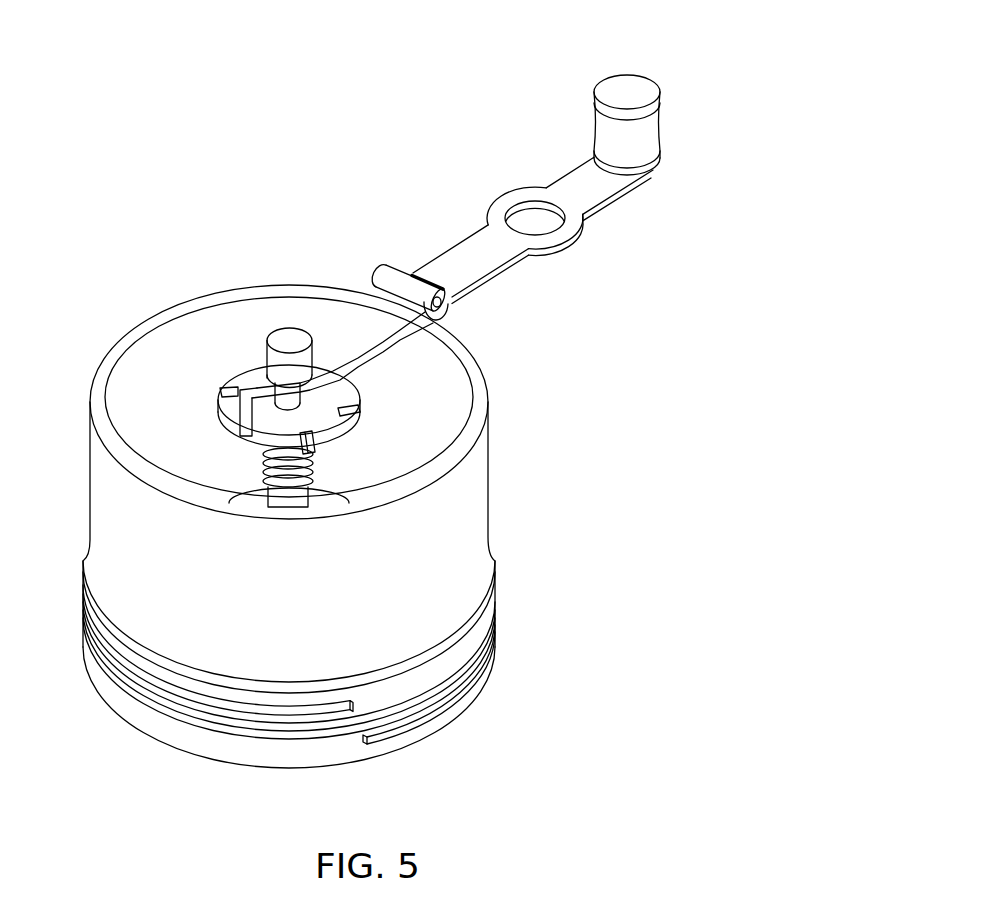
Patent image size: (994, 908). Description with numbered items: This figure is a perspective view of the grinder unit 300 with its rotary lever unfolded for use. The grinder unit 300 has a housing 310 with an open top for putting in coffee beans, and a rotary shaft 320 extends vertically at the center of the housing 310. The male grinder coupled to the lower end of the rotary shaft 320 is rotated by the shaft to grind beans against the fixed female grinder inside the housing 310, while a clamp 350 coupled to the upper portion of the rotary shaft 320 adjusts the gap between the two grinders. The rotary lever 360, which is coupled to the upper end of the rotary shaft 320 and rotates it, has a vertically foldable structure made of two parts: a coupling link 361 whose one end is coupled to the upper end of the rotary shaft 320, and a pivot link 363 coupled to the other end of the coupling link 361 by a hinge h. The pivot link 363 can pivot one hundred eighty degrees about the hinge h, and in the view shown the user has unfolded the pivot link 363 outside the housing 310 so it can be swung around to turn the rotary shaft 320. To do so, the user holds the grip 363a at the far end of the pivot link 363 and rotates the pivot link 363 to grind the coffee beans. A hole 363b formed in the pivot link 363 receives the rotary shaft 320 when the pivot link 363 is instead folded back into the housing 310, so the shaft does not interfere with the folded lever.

The grinder unit 300 is at (346, 526).
The housing 310 is at (488, 490).
The rotary shaft 320 is at (297, 399).
The clamp 350 is at (243, 373).
The rotary lever 360 is at (450, 259).
The coupling link 361 is at (343, 313).
The pivot link 363 is at (536, 168).
The grip 363a is at (627, 82).
The hole 363b is at (527, 215).
The hinge h is at (446, 309).